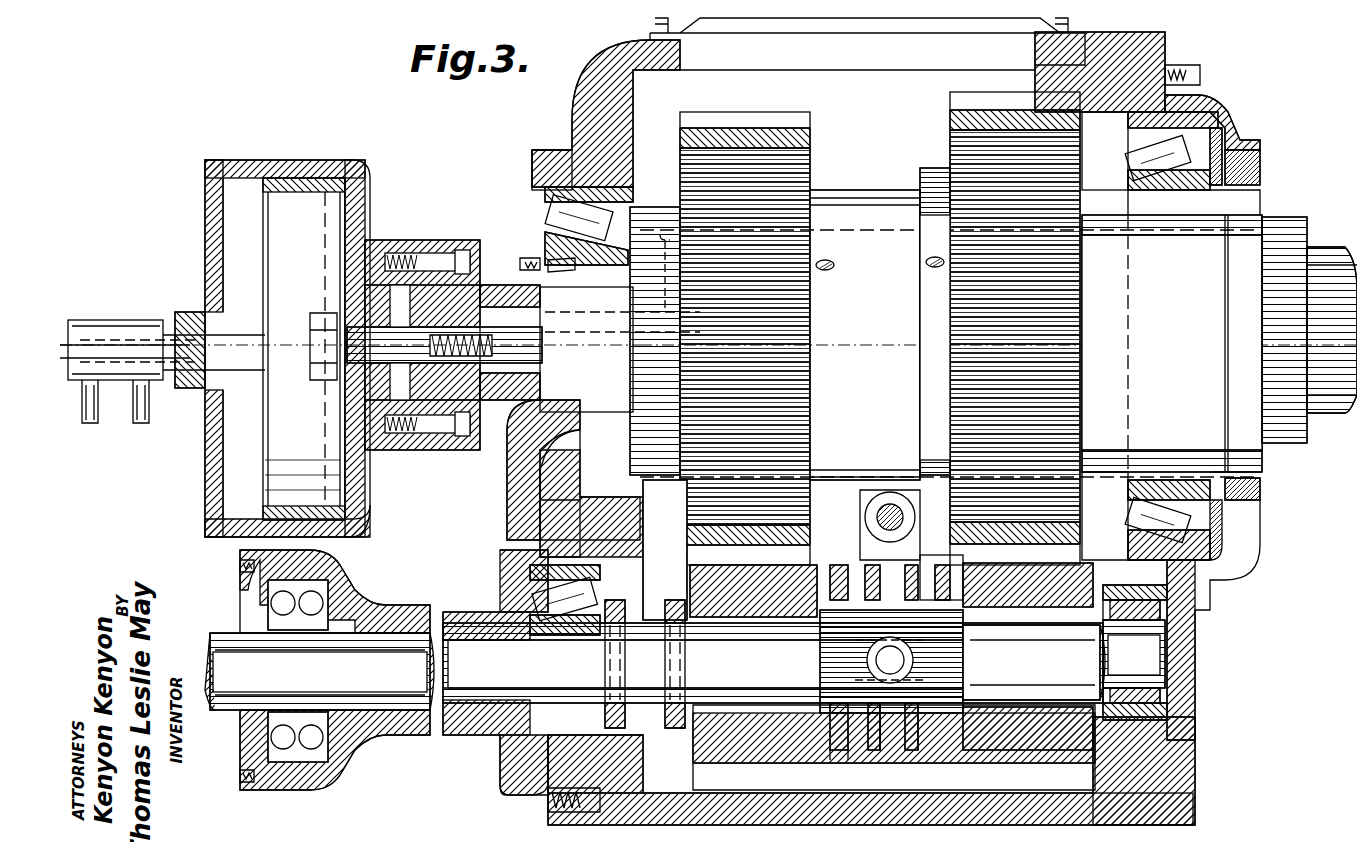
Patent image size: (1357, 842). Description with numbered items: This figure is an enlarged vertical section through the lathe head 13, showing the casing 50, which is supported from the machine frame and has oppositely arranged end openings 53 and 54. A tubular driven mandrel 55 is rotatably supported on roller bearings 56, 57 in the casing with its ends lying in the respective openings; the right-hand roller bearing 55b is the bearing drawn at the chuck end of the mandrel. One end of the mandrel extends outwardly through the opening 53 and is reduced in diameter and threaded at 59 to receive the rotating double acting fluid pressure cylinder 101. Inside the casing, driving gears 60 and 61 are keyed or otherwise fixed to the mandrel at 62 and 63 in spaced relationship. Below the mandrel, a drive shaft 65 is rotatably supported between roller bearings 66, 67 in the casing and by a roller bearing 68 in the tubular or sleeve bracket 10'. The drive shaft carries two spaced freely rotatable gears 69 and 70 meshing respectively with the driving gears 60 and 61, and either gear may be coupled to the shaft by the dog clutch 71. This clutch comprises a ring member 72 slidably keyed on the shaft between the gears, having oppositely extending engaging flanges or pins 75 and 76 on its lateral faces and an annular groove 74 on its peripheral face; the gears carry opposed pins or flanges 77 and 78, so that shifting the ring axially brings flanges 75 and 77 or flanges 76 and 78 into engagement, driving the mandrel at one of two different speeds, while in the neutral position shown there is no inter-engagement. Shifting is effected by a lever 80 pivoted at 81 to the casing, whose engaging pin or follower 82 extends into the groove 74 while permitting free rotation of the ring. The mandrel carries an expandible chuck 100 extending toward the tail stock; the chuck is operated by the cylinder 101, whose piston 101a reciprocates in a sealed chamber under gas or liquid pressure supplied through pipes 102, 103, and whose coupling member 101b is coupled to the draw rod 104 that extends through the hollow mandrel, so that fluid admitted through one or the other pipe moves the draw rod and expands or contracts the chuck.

The lathe head 13 is at (585, 90).
The end opening 53 is at (580, 182).
The roller bearing 56 is at (545, 215).
The tubular driven mandrel 55 is at (470, 285).
The bearing (right) 55b is at (1103, 200).
The threaded portion 59 is at (445, 262).
The double acting rotating fluid pressure cylinder 101 is at (210, 243).
The piston 101a is at (325, 205).
The coupling member 101b is at (365, 335).
The pipe 102 is at (90, 425).
The pipe 103 is at (141, 425).
The driving gear 60 is at (752, 120).
The driving gear 61 is at (993, 108).
The key 62 is at (805, 192).
The key 63 is at (945, 172).
The casing 50 is at (1125, 45).
The end opening 54 is at (1185, 96).
The roller bearing 57 is at (1222, 135).
The expandible chuck 100 is at (1322, 252).
The draw rod 104 is at (1168, 330).
The pivot 81 is at (890, 504).
The lever 80 is at (918, 545).
The engaging pin or flange 78 is at (950, 565).
The engaging pin or flange 77 is at (840, 565).
The engaging flange or pin 75 is at (853, 575).
The engaging flange or pin 76 is at (925, 588).
The engaging pin or follower 82 is at (960, 660).
The roller bearing 66 is at (1150, 607).
The drive shaft 65 is at (1150, 652).
The roller bearing 67 is at (515, 552).
The roller bearing 68 is at (318, 598).
The tubular or sleeve bracket 10' is at (654, 683).
The gear 69 is at (700, 745).
The dog clutch 71 is at (855, 752).
The ring member 72 is at (882, 752).
The annular groove 74 is at (920, 752).
The gear 70 is at (968, 742).